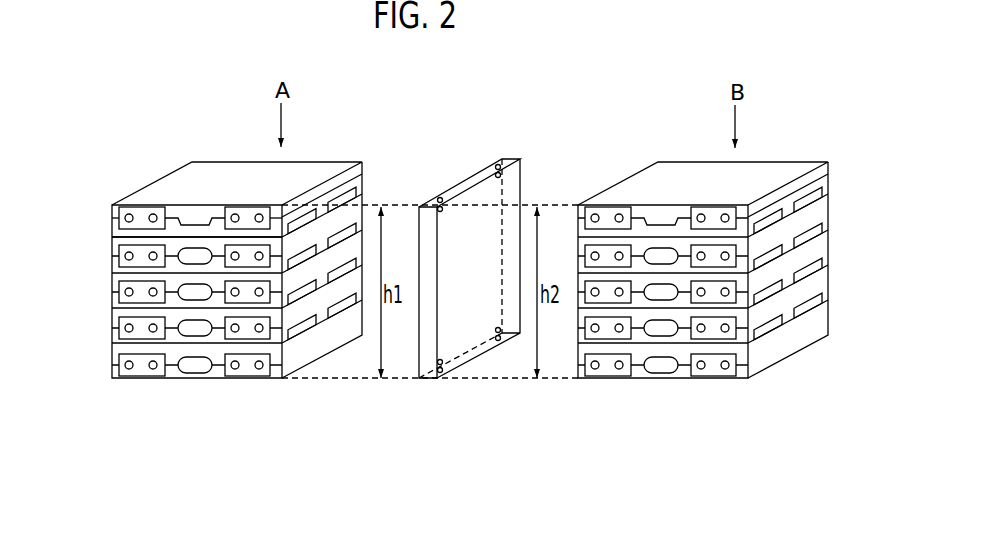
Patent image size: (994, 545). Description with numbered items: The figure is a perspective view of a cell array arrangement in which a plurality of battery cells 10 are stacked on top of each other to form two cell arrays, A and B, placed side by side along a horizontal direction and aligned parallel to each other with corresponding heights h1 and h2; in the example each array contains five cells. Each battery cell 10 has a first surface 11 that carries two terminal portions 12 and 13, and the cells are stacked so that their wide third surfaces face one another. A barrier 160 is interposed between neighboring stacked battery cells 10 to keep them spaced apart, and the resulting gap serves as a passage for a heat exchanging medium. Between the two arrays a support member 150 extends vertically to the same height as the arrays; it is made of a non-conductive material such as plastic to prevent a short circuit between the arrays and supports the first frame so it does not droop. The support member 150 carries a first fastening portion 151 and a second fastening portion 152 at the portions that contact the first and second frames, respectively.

The battery cell 10 is at (470, 243).
The first surface 11 is at (173, 215).
The terminal portion 12 is at (138, 215).
The terminal portion 13 is at (247, 217).
The barrier 160 is at (110, 242).
The support member 150 is at (477, 263).
The first fastening portion 151 is at (497, 164).
The second fastening portion 152 is at (443, 378).